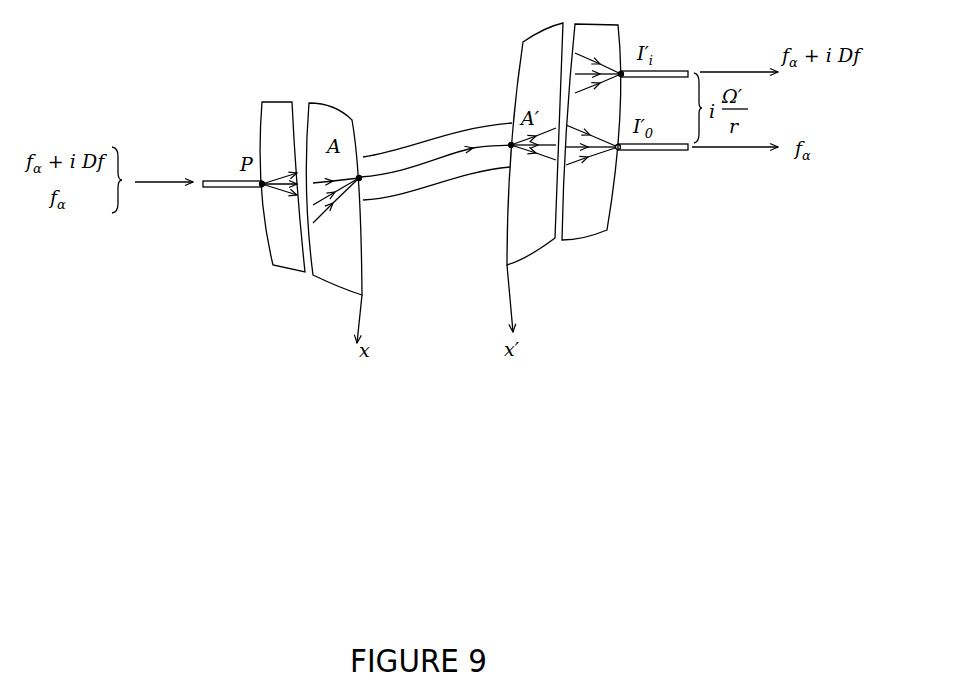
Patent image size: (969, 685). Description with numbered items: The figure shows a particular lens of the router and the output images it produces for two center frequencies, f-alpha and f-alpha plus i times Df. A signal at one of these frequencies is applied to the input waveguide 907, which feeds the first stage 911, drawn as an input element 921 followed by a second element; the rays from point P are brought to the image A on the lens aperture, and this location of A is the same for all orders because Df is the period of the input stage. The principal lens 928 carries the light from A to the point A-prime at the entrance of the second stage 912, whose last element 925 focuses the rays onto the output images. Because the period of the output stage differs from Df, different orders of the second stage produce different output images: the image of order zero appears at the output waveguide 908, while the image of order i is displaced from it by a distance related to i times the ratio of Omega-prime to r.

The input waveguide 907 is at (245, 192).
The output light guide 908 is at (632, 153).
The first lens group 911 is at (292, 222).
The second lens group 912 is at (590, 177).
The first lens element 921 is at (265, 232).
The last lens element 925 is at (612, 198).
The principal lens 928 is at (403, 147).